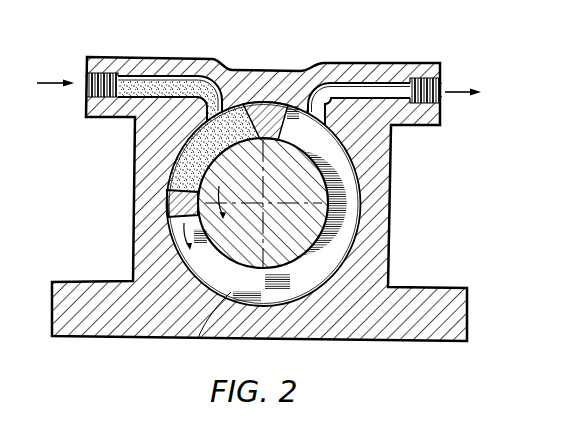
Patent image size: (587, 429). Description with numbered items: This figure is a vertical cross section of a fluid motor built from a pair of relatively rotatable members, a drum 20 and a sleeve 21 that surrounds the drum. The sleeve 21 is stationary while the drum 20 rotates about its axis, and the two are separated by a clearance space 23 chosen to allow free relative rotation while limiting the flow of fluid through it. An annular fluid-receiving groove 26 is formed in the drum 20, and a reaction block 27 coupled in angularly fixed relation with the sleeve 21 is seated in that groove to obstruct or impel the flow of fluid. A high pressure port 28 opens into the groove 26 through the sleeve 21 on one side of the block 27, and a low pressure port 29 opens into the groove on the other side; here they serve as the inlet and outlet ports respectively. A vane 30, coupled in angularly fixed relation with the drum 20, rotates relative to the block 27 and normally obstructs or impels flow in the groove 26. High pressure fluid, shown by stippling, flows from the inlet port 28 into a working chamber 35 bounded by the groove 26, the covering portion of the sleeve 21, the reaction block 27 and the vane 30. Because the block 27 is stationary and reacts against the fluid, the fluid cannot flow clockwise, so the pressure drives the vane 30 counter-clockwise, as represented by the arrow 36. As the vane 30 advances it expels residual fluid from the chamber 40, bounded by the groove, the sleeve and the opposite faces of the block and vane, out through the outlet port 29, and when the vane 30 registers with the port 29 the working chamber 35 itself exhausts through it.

The drum 20 is at (240, 243).
The sleeve 21 is at (389, 160).
The clearance space 23 is at (362, 192).
The fluid-receiving groove 26 is at (348, 230).
The reaction block 27 is at (282, 130).
The high pressure port 28 is at (233, 70).
The low pressure port 29 is at (307, 97).
The vane 30 is at (164, 202).
The working chamber 35 is at (177, 153).
The arrow 36 is at (173, 238).
The chamber 40 is at (198, 338).